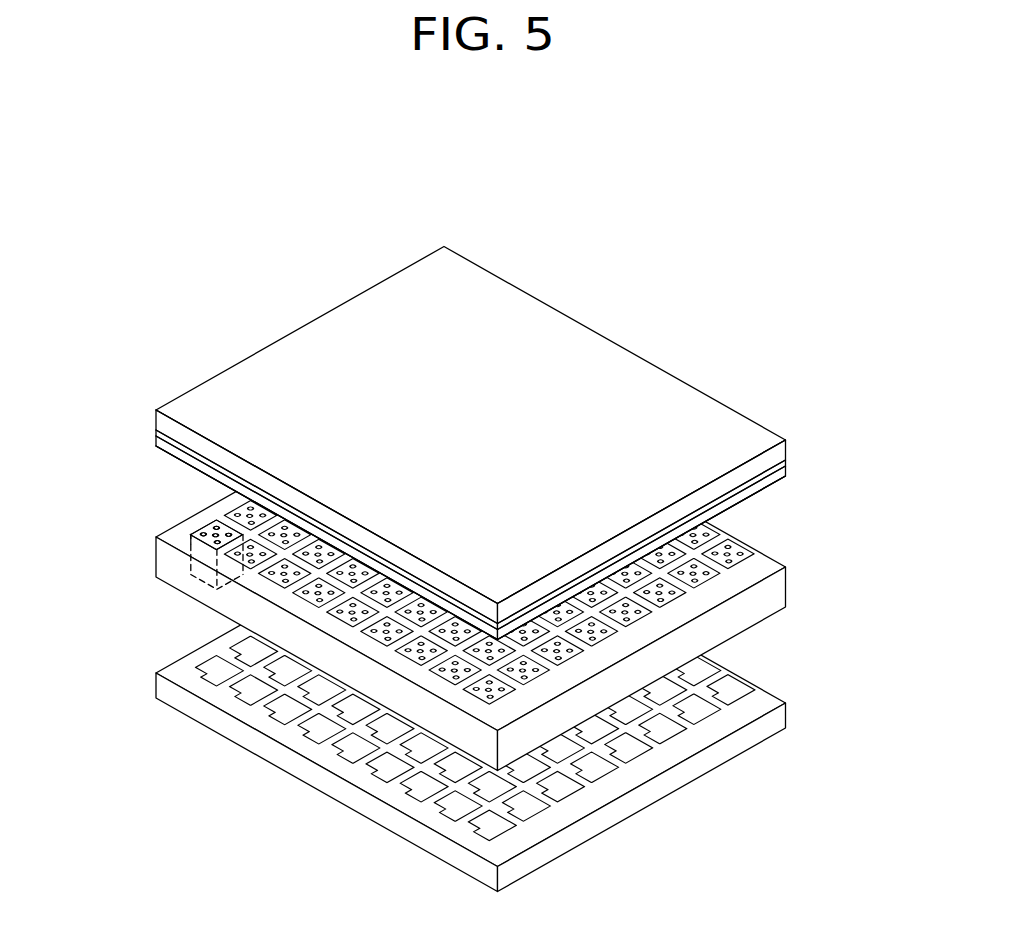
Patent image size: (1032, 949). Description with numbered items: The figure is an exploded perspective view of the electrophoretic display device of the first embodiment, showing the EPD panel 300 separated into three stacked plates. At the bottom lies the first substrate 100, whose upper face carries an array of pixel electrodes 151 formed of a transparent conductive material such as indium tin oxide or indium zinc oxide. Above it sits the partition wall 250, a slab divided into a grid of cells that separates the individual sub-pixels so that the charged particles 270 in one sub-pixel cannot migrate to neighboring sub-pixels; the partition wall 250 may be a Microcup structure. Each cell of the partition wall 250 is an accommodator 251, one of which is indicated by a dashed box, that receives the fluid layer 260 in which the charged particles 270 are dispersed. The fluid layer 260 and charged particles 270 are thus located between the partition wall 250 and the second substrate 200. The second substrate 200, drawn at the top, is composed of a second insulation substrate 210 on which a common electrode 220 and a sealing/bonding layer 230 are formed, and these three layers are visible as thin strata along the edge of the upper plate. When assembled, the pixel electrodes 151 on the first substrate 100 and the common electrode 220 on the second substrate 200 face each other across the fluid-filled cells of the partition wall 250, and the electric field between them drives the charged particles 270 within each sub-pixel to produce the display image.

The first substrate 100 is at (221, 806).
The pixel electrode 151 is at (203, 663).
The second substrate 200 is at (877, 430).
The second insulation substrate 210 is at (788, 443).
The common electrode 220 is at (788, 462).
The sealing/bonding layer 230 is at (788, 471).
The partition wall 250 is at (792, 585).
The accommodator 251 is at (181, 578).
The fluid layer 260 is at (203, 528).
The charged particles 270 is at (186, 541).
The EPD panel 300 is at (227, 266).